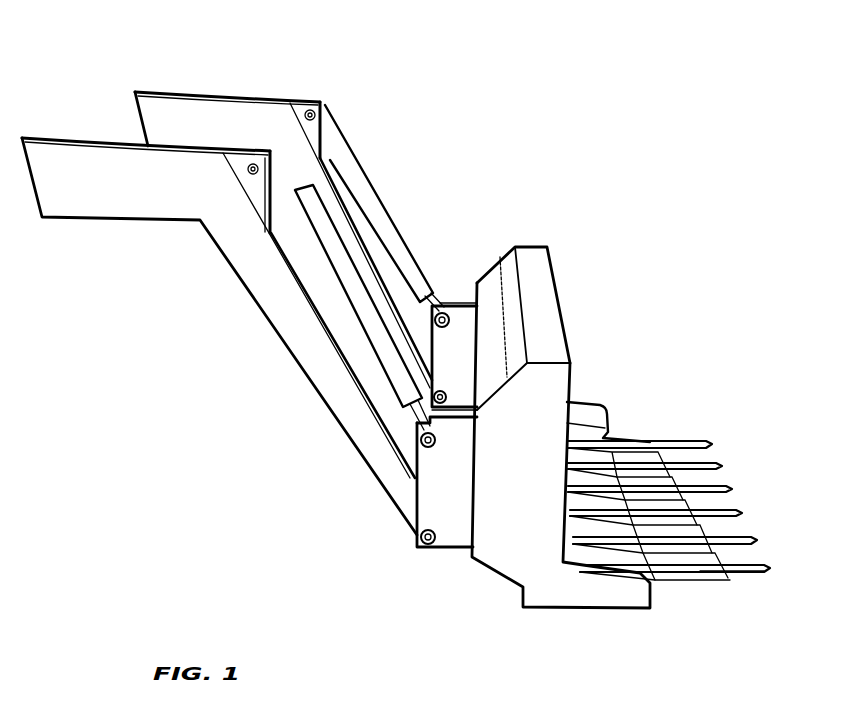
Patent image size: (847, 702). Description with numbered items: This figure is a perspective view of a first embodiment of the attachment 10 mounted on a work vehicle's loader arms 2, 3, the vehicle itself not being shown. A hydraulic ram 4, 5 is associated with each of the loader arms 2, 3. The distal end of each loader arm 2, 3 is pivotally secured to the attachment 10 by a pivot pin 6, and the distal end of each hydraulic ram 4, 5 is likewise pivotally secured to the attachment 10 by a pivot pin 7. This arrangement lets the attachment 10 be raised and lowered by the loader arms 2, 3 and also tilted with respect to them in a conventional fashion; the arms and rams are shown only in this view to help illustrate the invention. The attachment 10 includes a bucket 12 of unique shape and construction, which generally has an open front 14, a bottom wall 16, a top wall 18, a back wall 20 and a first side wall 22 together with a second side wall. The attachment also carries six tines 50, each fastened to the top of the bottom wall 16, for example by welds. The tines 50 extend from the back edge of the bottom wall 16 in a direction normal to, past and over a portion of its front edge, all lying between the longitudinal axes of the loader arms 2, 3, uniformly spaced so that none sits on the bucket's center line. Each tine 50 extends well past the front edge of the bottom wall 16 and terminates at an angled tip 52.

The loader arm 2 is at (140, 203).
The loader arm 3 is at (222, 122).
The hydraulic ram 4 is at (318, 268).
The hydraulic ram 5 is at (368, 188).
The pivot pin 6 is at (449, 312).
The pivot pin 7 is at (443, 390).
The attachment 10 is at (597, 300).
The bucket 12 is at (560, 623).
The open front 14 is at (593, 363).
The bottom wall 16 is at (665, 588).
The top wall 18 is at (528, 267).
The back wall 20 is at (497, 283).
The first side wall 22 is at (514, 460).
The tines 50 is at (726, 515).
The angled tip 52 is at (765, 573).